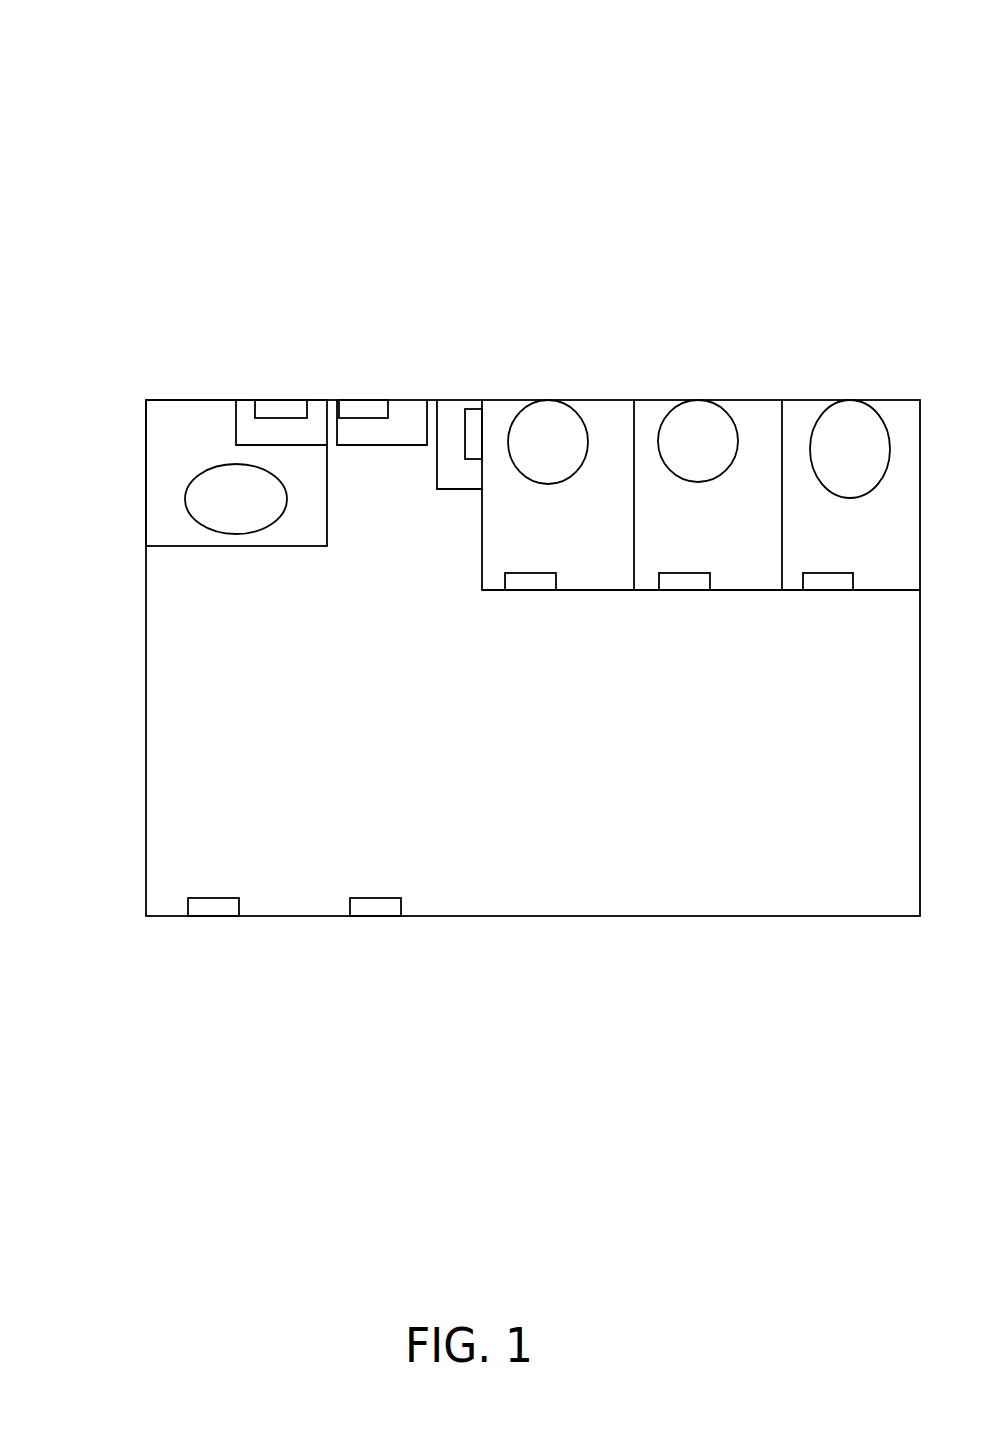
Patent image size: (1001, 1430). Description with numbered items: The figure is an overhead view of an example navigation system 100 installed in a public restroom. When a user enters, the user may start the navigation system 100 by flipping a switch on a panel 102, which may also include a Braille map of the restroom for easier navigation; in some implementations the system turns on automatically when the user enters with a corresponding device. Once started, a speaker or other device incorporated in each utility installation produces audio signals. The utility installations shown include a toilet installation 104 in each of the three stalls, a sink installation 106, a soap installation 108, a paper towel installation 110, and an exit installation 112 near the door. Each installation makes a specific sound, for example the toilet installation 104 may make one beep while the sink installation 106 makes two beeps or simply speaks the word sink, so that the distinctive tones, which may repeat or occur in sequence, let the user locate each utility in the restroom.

The navigation system 100 is at (140, 58).
The panel 102 is at (380, 898).
The toilet installation 104 is at (533, 573).
The sink installation 106 is at (283, 400).
The soap installation 108 is at (372, 400).
The paper towel installation 110 is at (480, 400).
The exit installation 112 is at (218, 898).